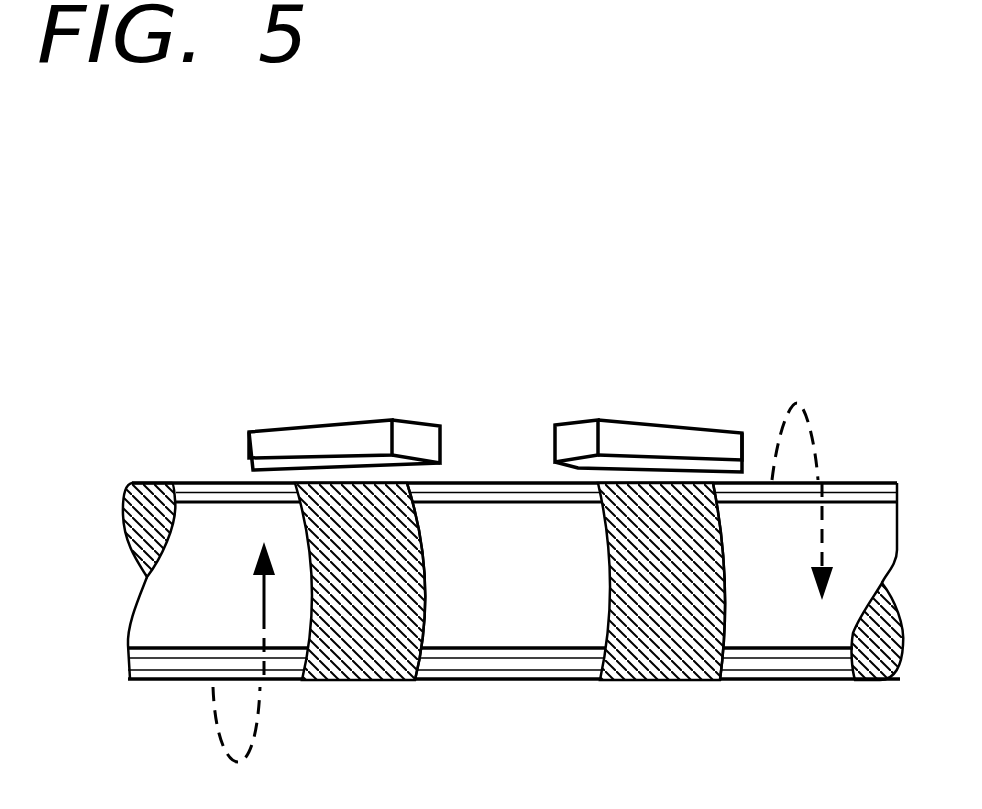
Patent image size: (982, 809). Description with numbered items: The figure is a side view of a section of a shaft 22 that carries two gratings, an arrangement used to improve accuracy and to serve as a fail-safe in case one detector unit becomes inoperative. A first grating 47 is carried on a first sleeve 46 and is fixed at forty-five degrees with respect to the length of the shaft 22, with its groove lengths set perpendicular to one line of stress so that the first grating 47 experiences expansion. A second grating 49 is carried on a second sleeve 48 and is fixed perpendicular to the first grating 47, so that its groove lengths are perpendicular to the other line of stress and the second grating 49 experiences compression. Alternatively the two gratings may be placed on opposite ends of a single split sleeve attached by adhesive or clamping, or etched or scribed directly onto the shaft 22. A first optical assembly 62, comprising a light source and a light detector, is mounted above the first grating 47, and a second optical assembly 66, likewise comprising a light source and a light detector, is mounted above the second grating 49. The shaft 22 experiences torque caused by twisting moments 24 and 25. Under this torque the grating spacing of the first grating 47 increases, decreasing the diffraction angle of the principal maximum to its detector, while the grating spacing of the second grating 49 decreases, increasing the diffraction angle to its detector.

The shaft 22 is at (532, 595).
The twisting moment 24 is at (214, 657).
The twisting moment 25 is at (822, 488).
The first sleeve 46 is at (420, 622).
The first grating 47 is at (347, 683).
The second sleeve 48 is at (720, 620).
The second grating 49 is at (627, 665).
The first optical assembly 62 is at (330, 425).
The second optical assembly 66 is at (648, 424).